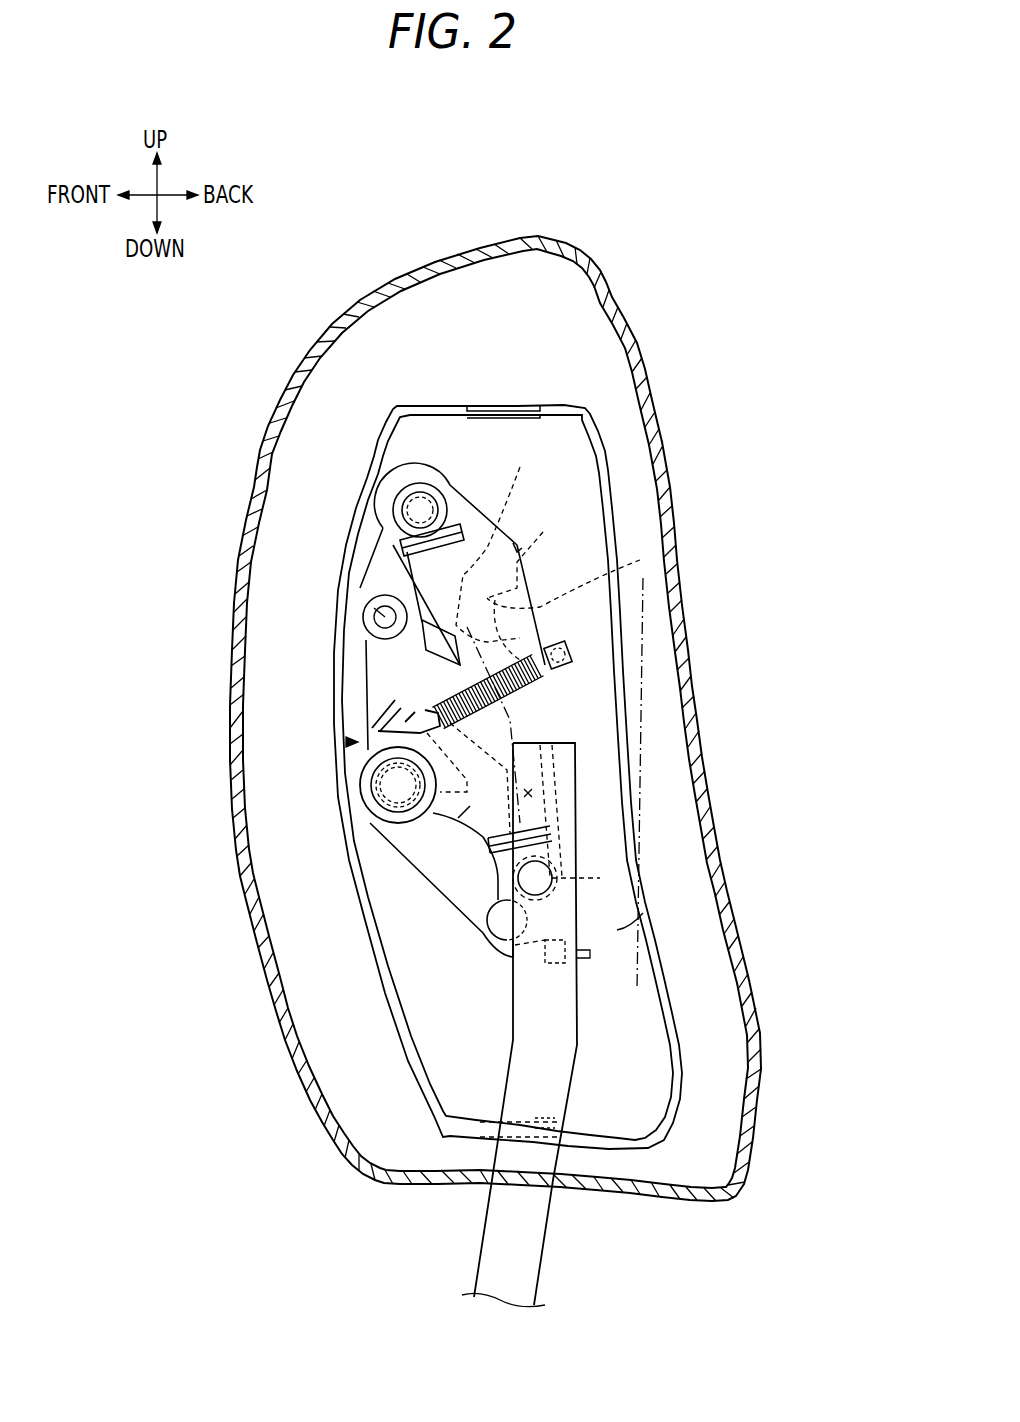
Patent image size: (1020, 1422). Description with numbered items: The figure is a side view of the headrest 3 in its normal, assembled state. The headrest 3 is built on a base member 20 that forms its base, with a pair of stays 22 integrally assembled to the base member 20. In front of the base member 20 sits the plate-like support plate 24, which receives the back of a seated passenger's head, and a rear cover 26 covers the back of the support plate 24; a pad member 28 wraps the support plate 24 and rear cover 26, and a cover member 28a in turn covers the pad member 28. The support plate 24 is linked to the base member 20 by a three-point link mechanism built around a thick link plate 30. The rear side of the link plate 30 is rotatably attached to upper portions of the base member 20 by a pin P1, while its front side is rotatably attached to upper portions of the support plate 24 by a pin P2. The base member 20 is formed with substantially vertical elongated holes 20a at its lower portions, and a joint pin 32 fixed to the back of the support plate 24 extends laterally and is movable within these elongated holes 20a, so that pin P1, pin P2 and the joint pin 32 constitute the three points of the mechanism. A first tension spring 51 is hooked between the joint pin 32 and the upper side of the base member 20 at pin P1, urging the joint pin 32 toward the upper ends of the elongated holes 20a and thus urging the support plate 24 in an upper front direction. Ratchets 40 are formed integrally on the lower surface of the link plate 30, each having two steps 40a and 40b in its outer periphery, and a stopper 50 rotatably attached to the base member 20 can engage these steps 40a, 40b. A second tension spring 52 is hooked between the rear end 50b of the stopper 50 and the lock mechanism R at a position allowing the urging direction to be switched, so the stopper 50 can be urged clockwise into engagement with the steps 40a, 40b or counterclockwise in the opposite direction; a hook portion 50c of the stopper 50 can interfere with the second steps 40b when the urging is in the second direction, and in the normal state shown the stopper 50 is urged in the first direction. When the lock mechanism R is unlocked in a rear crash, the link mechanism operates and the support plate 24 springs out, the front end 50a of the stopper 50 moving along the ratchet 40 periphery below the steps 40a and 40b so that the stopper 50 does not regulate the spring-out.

The headrest 3 is at (713, 247).
The base member 20 is at (540, 713).
The elongated holes 20a is at (540, 793).
The stays 22 is at (518, 1237).
The support plate 24 is at (345, 920).
The rear cover 26 is at (643, 913).
The pad member 28 is at (520, 283).
The cover member 28a is at (630, 345).
The link plate 30 is at (392, 568).
The joint pin 32 is at (600, 870).
The ratchets 40 is at (400, 585).
The first step 40a is at (640, 560).
The second step 40b is at (501, 543).
The stopper 50 is at (437, 665).
The front end of the stopper 50a is at (420, 640).
The rear end of the stopper 50b is at (560, 653).
The hook portion 50c is at (533, 585).
The first tension spring 51 is at (447, 492).
The second tension spring 52 is at (458, 818).
The pin P1 is at (393, 487).
The pin P2 is at (380, 617).
The lock mechanism R is at (350, 742).